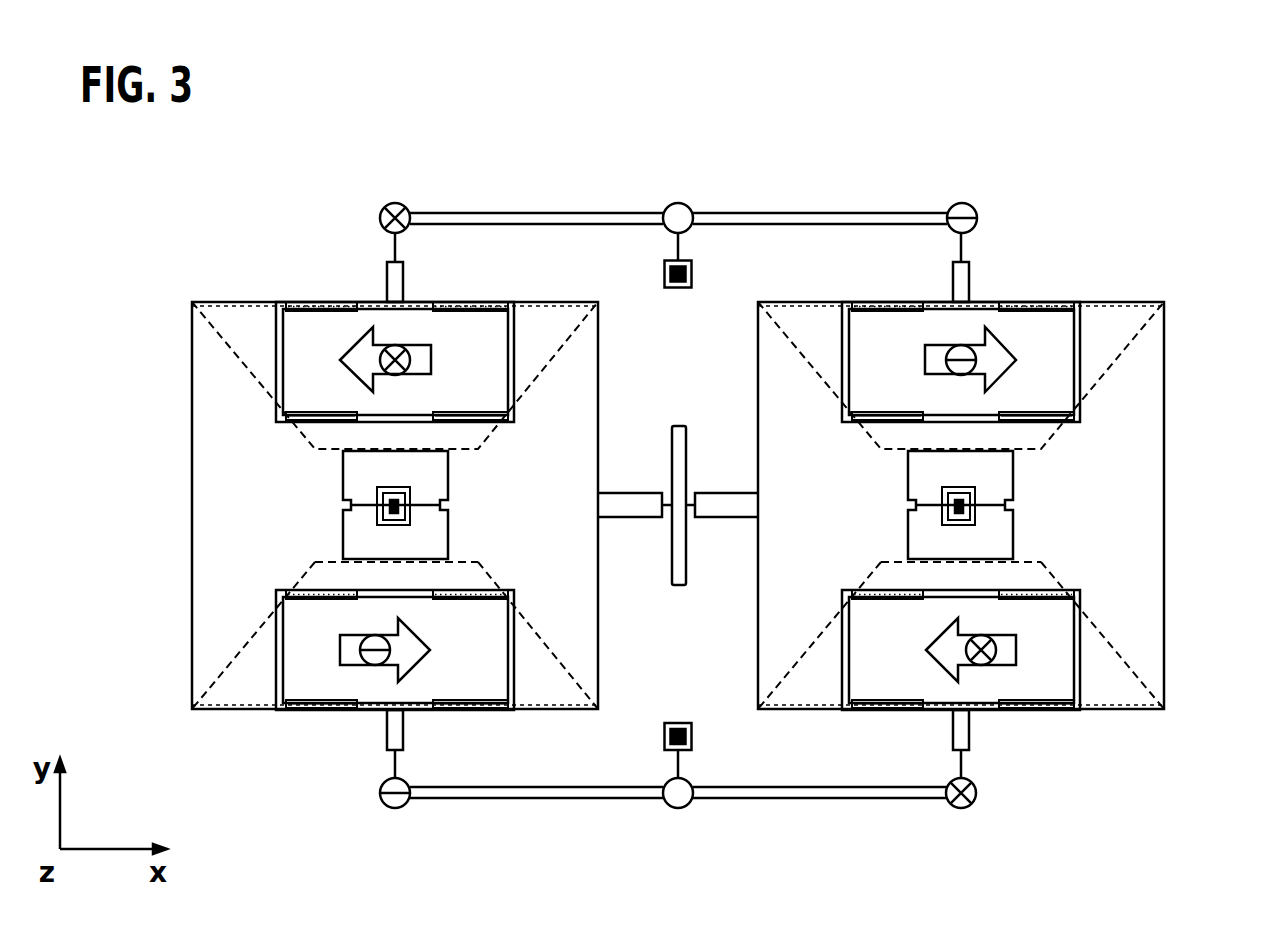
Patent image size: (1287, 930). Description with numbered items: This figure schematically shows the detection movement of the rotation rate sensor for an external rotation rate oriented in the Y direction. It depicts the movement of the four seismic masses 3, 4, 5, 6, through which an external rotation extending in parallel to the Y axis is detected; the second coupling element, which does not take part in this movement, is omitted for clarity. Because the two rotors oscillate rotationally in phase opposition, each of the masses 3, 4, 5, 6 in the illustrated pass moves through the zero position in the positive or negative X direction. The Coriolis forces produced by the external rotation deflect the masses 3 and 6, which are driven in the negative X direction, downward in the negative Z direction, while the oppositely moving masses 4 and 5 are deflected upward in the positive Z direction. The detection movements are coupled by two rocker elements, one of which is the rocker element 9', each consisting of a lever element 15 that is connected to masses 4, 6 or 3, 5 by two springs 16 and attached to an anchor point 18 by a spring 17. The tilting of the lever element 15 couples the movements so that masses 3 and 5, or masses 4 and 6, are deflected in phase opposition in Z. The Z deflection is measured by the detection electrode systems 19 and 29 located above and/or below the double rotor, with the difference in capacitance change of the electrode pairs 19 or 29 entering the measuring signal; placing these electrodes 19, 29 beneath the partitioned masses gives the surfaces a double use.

The seismic mass 3 is at (318, 325).
The seismic mass 4 is at (308, 685).
The seismic mass 5 is at (1038, 330).
The seismic mass 6 is at (1038, 685).
The rocker element 9' is at (678, 705).
The lever element 15 is at (677, 750).
The spring 16 is at (395, 768).
The spring 17 is at (668, 768).
The anchor point 18 is at (674, 712).
The detection electrode system 19 is at (240, 334).
The detection electrode system 29 is at (1116, 334).